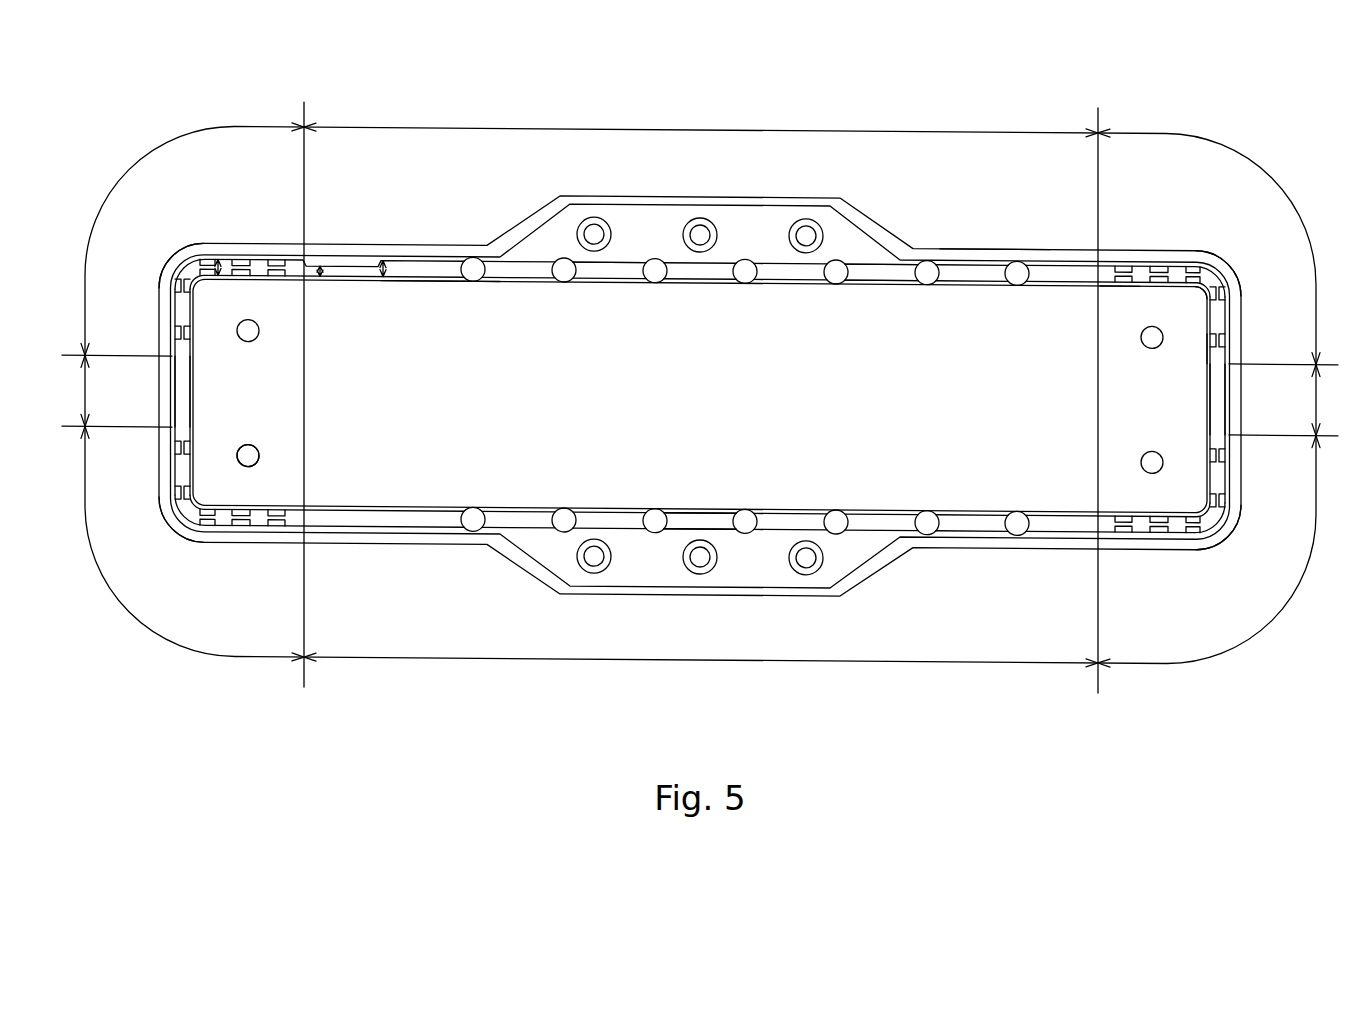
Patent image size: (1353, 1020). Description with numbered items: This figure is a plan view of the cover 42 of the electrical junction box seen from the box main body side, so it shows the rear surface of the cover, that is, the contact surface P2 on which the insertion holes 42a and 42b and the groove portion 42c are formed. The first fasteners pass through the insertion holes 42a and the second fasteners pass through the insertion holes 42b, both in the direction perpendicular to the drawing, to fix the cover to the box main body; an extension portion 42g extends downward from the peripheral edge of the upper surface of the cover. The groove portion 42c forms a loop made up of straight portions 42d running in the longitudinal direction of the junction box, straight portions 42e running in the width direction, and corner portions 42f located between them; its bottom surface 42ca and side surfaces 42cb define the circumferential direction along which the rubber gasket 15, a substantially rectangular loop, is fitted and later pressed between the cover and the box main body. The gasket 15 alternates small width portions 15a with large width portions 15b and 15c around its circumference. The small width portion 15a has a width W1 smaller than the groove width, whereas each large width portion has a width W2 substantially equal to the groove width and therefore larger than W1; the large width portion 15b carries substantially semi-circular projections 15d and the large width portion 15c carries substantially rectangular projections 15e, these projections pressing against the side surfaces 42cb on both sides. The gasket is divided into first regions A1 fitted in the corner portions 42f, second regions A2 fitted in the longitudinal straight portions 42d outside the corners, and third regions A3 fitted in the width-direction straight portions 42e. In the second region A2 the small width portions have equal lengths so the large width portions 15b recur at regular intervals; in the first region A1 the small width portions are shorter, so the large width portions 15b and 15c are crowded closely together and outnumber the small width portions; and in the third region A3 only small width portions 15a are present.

The cover 42 is at (698, 181).
The insertion hole 42a is at (259, 456).
The insertion hole 42b is at (803, 218).
The groove portion 42c is at (883, 252).
The bottom surface 42ca is at (880, 282).
The side surface 42cb is at (833, 262).
The straight portion 42d is at (697, 510).
The straight portion 42e is at (197, 372).
The corner portion 42f is at (188, 260).
The extension portion 42g is at (983, 255).
The gasket 15 is at (350, 267).
The small width portion 15a is at (413, 270).
The large width portion 15b is at (473, 281).
The large width portion 15c is at (1218, 310).
The projection 15d is at (497, 262).
The projection 15e is at (1227, 343).
The first region A1 is at (700, 394).
The second region A2 is at (701, 397).
The third region A3 is at (702, 395).
The width of small width portion W1 is at (333, 258).
The width of large width portion W2 is at (218, 258).
The contact surface P2 is at (613, 298).